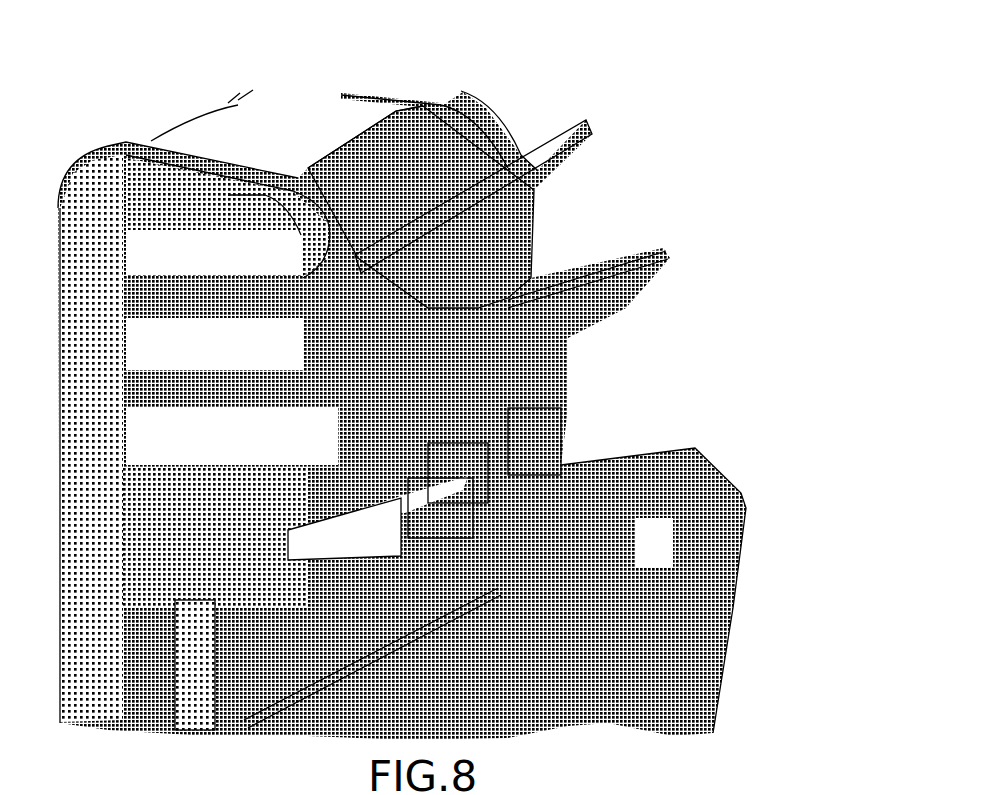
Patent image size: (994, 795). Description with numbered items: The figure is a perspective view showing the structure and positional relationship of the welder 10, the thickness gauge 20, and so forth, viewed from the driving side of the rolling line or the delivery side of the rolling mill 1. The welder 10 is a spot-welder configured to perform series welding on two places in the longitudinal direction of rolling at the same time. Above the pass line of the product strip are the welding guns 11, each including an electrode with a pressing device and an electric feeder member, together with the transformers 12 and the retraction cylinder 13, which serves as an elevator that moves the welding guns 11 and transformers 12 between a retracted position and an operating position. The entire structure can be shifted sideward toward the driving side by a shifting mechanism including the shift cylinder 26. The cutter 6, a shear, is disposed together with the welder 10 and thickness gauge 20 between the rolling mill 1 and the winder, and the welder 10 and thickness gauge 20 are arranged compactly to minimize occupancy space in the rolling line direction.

The rolling mill 1 is at (323, 137).
The welder 10 is at (492, 143).
The retraction cylinder 13 is at (487, 252).
The shift cylinder 26 is at (593, 258).
The transformer 12 is at (537, 435).
The welding gun 11 is at (445, 457).
The cutter 6 is at (433, 489).
The thickness gauge 20 is at (342, 496).